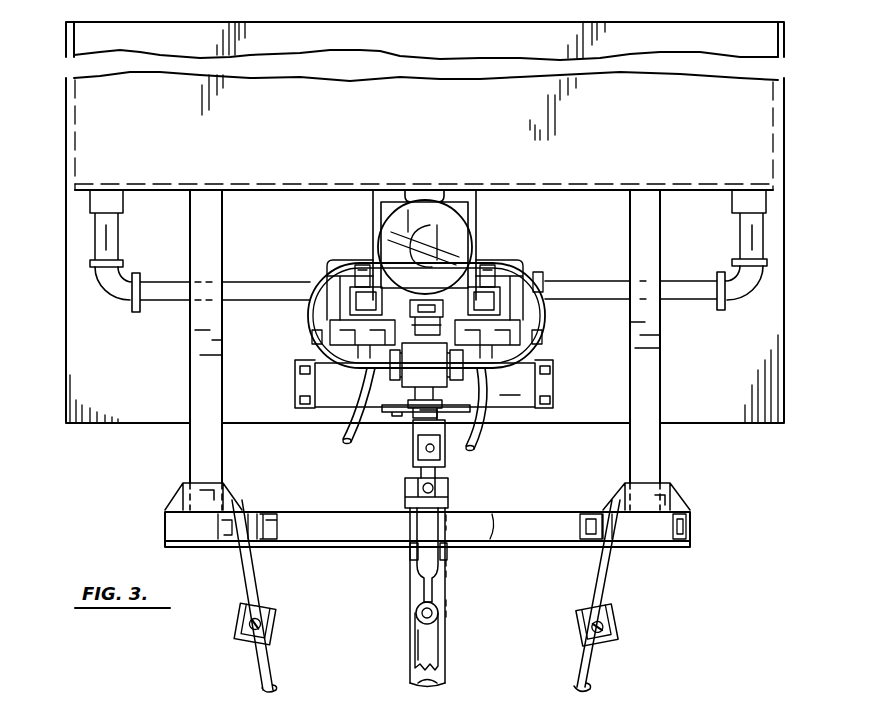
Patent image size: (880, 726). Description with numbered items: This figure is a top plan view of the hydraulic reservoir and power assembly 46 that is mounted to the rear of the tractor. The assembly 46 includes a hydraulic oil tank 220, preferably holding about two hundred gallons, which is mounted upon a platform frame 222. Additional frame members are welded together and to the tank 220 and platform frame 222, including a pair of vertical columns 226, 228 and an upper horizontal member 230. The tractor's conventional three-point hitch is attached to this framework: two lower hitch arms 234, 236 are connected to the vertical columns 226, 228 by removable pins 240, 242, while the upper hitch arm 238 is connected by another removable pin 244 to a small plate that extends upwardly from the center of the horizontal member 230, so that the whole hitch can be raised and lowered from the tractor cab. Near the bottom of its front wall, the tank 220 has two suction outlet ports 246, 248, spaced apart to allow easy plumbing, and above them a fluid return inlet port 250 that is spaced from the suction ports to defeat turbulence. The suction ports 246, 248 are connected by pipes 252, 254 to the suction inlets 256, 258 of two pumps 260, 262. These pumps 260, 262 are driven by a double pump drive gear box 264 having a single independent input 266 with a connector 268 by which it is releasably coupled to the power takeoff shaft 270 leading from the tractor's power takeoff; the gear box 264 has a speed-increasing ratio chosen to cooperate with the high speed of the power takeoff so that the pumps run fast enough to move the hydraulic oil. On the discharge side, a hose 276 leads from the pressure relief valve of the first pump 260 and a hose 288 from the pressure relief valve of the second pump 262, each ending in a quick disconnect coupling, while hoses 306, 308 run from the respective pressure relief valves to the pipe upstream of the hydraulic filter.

The hydraulic reservoir and power assembly 46 is at (161, 470).
The hydraulic oil tank 220 is at (76, 79).
The platform frame 222 is at (118, 426).
The vertical column 226 is at (279, 517).
The vertical column 228 is at (587, 508).
The upper horizontal member 230 is at (497, 543).
The lower hitch arm 234 is at (281, 686).
The lower hitch arm 236 is at (592, 687).
The upper hitch arm 238 is at (432, 651).
The removable pin 240 is at (222, 528).
The removable pin 242 is at (628, 537).
The removable pin 244 is at (410, 552).
The suction outlet port 246 is at (98, 203).
The suction outlet port 248 is at (752, 203).
The fluid return inlet port 250 is at (446, 188).
The pipe 252 is at (160, 295).
The pipe 254 is at (690, 295).
The suction inlet 256 is at (318, 268).
The suction inlet 258 is at (533, 277).
The pump 260 is at (345, 260).
The pump 262 is at (500, 260).
The double pump drive gear box 264 is at (516, 418).
The input 266 is at (410, 450).
The connector 268 is at (448, 491).
The power takeoff shaft 270 is at (427, 686).
The hose 276 is at (343, 436).
The hose 288 is at (473, 452).
The hose 306 is at (312, 337).
The hose 308 is at (543, 331).